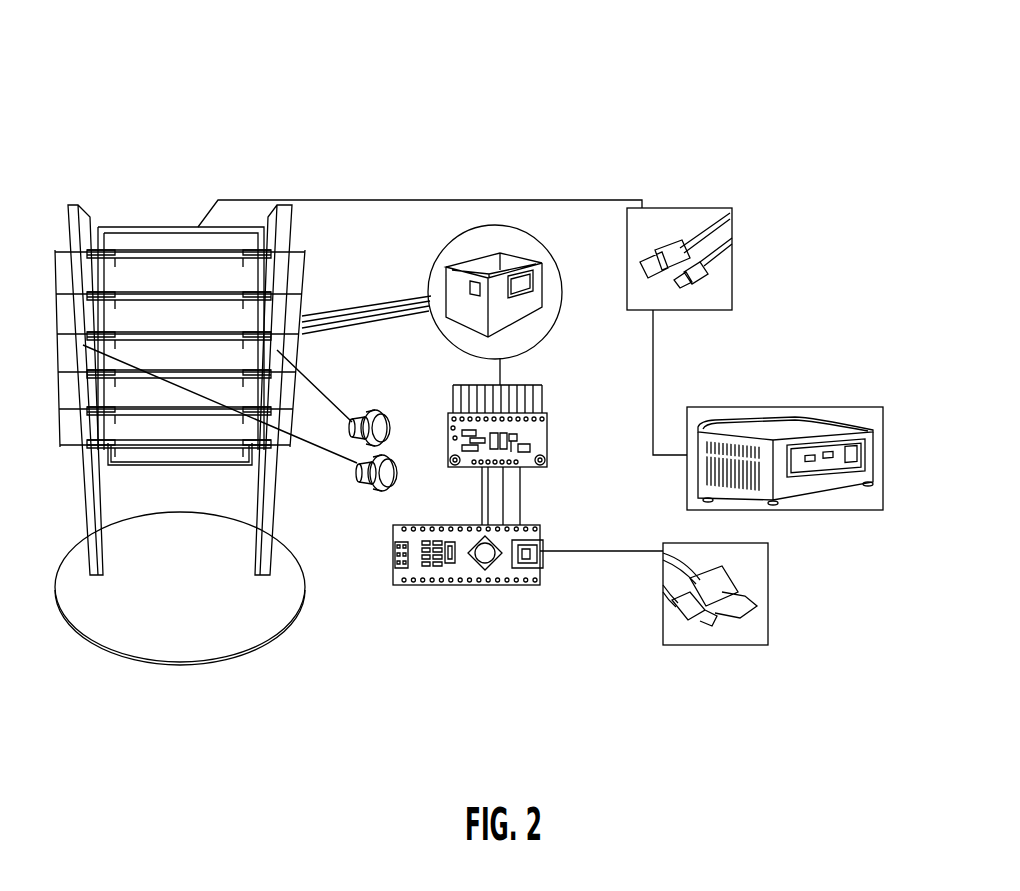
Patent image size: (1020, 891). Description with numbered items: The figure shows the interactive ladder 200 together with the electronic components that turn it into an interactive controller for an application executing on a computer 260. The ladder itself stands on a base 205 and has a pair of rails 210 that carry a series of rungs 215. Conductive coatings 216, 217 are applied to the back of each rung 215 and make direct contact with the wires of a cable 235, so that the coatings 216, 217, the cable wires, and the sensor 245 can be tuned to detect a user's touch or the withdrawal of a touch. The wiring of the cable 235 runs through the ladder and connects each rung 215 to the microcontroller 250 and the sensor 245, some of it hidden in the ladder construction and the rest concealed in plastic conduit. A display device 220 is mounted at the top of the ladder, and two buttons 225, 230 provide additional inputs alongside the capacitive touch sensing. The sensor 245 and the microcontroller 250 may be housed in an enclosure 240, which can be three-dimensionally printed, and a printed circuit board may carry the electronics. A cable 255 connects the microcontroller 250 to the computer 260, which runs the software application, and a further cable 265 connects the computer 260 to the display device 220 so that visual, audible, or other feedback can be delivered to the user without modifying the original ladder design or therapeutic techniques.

The interactive ladder 200 is at (122, 79).
The base 205 is at (157, 640).
The rails 210 is at (287, 207).
The rungs 215 is at (135, 250).
The conductive coating 216 is at (242, 248).
The conductive coating 217 is at (90, 250).
The display device 220 is at (187, 227).
The button 225 is at (378, 489).
The button 230 is at (358, 415).
The cable 235 is at (413, 300).
The enclosure 240 is at (517, 265).
The sensor 245 is at (538, 467).
The microcontroller 250 is at (495, 587).
The cable 255 is at (690, 625).
The computer 260 is at (862, 510).
The cable 265 is at (692, 238).